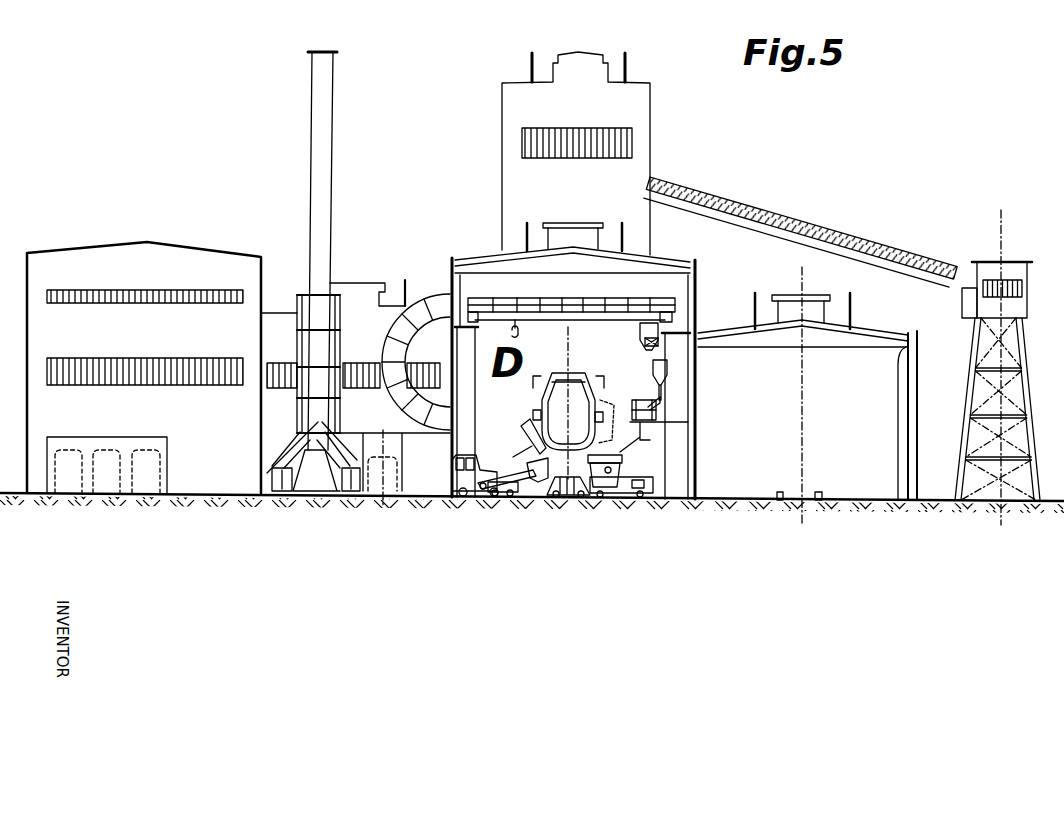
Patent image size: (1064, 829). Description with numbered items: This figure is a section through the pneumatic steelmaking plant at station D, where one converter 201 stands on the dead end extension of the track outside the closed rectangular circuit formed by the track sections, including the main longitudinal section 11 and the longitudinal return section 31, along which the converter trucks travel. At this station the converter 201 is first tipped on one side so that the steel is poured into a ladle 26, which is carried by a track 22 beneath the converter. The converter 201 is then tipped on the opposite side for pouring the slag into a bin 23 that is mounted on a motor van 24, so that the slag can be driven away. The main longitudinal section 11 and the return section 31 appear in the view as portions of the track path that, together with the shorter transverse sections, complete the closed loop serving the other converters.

The converter 201 is at (595, 388).
The motor van 24 is at (472, 492).
The bin 23 is at (532, 488).
The main longitudinal section 11 is at (587, 494).
The ladle 26 is at (622, 466).
The track 22 is at (634, 491).
The longitudinal return section 31 is at (818, 505).